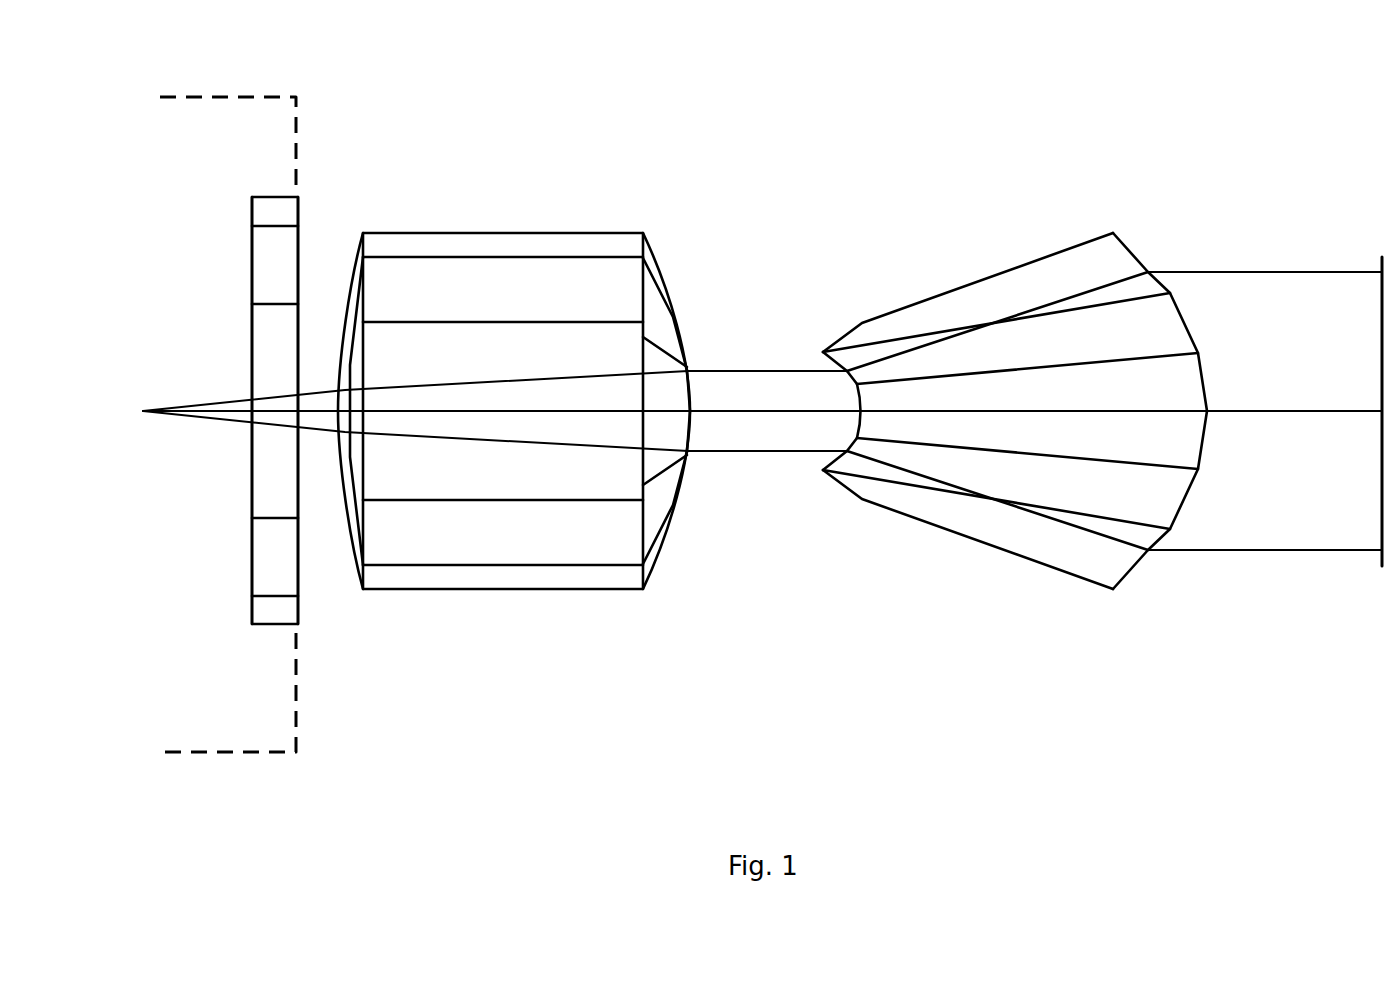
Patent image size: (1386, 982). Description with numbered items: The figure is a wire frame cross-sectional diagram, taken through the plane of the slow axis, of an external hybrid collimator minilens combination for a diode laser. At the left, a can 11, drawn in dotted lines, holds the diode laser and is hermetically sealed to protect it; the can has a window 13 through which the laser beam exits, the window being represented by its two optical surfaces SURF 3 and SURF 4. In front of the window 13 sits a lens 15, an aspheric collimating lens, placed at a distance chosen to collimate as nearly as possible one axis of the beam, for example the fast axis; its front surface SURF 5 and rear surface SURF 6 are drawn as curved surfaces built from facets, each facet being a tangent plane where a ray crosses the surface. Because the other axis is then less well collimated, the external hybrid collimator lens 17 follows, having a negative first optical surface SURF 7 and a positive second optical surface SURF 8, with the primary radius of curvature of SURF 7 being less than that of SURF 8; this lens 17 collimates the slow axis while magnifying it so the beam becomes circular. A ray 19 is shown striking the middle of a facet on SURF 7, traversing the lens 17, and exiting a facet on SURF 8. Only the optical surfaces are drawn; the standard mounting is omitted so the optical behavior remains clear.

The can 11 is at (227, 125).
The window 13 is at (282, 260).
The aspheric collimating lens 15 is at (477, 543).
The external hybrid collimator lens 17 is at (1040, 272).
The ray 19 is at (766, 318).
The optical surface of window SURF 3 is at (247, 568).
The optical surface of window SURF 4 is at (297, 578).
The front surface of collimating lens SURF 5 is at (347, 527).
The rear surface of collimating lens SURF 6 is at (660, 537).
The first optical surface of lens 17 SURF 7 is at (847, 427).
The second optical surface of lens 17 SURF 8 is at (1180, 517).